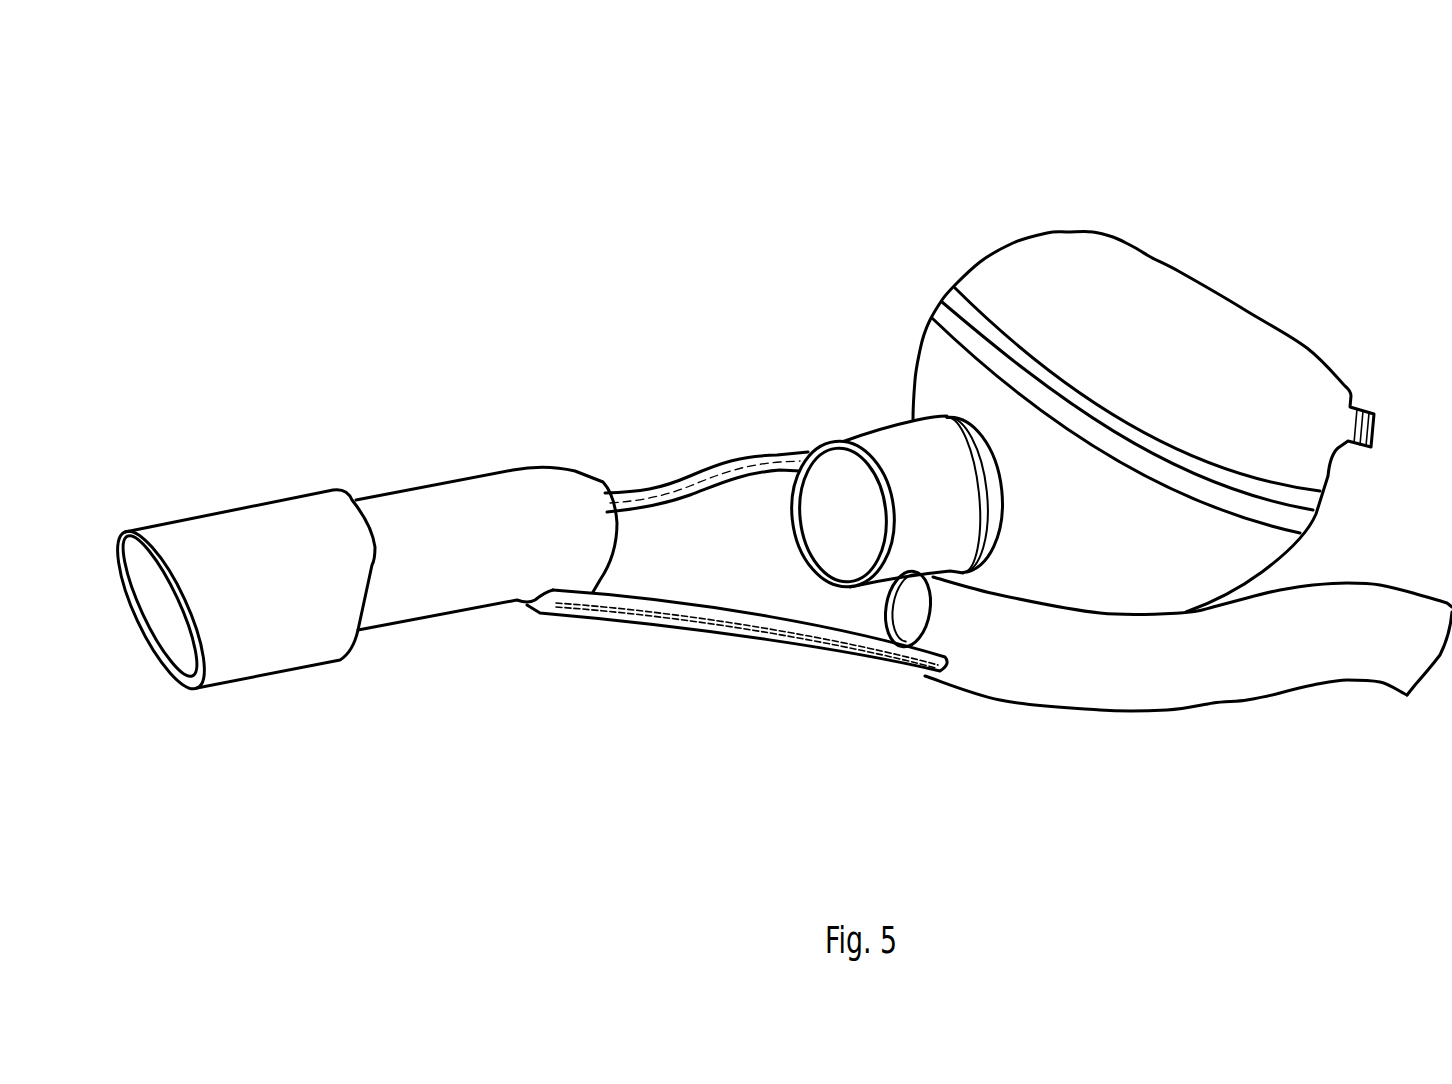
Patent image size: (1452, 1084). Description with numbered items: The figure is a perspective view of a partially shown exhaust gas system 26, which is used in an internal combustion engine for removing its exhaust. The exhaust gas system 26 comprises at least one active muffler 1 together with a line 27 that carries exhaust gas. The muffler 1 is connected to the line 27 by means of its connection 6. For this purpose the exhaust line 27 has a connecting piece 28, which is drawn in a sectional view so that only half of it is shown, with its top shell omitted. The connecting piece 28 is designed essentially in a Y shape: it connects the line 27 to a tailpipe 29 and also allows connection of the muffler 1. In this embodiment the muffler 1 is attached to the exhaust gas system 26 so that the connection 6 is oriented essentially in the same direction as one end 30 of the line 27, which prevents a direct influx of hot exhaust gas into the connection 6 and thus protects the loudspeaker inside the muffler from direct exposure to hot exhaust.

The exhaust gas system 26 is at (592, 282).
The active muffler 1 is at (1165, 263).
The connection 6 is at (832, 478).
The line 27 is at (1167, 712).
The connecting piece 28 is at (687, 625).
The tailpipe 29 is at (452, 477).
The end of the line 30 is at (897, 627).